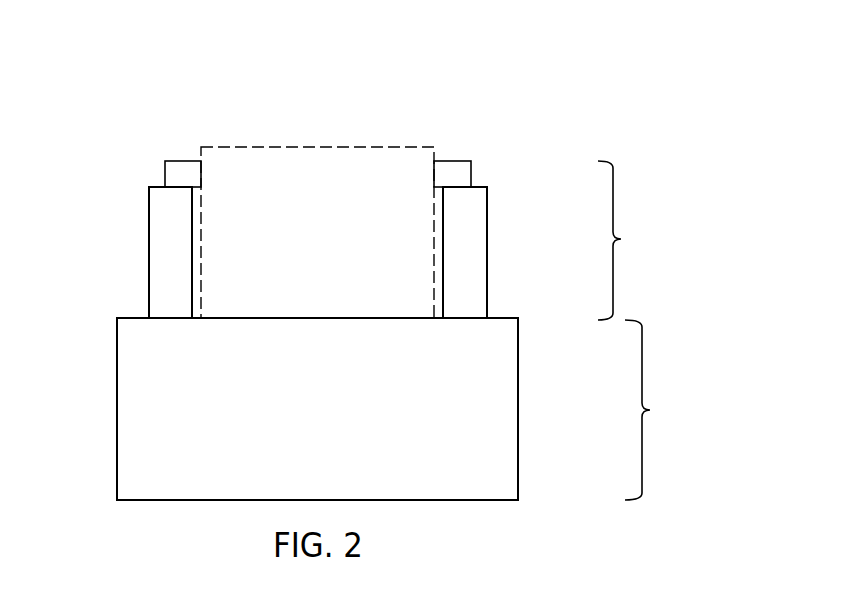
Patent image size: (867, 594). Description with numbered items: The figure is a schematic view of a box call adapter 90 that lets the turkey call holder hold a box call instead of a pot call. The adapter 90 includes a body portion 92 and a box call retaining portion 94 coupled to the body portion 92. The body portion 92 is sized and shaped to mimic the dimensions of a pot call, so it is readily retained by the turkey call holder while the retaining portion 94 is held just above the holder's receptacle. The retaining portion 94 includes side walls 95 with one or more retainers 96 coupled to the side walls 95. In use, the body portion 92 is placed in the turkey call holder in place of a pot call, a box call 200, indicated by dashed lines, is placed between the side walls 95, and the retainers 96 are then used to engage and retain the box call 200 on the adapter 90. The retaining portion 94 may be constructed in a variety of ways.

The box call adapter 90 is at (582, 80).
The body portion 92 is at (650, 410).
The box call retaining portion 94 is at (622, 239).
The side walls 95 is at (160, 243).
The retainers 96 is at (180, 170).
The box call 200 is at (316, 147).